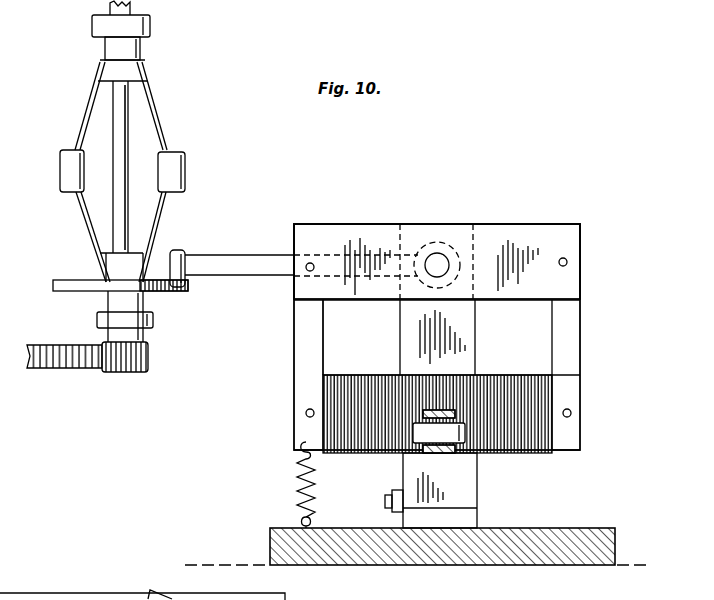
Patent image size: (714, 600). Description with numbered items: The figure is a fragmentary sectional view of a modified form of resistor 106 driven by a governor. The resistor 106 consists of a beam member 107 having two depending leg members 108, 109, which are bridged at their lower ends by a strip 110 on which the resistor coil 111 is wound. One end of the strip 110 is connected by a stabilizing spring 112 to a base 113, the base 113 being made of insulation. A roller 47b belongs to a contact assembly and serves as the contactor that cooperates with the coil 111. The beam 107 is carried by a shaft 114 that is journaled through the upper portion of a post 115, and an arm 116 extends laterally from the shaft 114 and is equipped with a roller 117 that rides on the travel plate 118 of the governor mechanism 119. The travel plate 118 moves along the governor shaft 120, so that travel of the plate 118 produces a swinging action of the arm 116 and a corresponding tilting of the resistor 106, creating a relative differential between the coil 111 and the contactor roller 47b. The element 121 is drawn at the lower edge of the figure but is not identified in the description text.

The resistor 106 is at (542, 224).
The beam member 107 is at (493, 232).
The depending leg member 108 is at (572, 330).
The depending leg member 109 is at (305, 347).
The strip 110 is at (572, 392).
The resistor coil 111 is at (493, 377).
The stabilizing spring 112 is at (298, 493).
The base 113 is at (460, 565).
The shaft 114 is at (438, 256).
The post 115 is at (408, 339).
The arm 116 is at (228, 267).
The roller 117 is at (182, 253).
The travel plate 118 is at (62, 285).
The governor mechanism 119 is at (163, 118).
The governor shaft 120 is at (120, 117).
The conveyor line 121 is at (83, 598).
The roller 47b is at (413, 444).